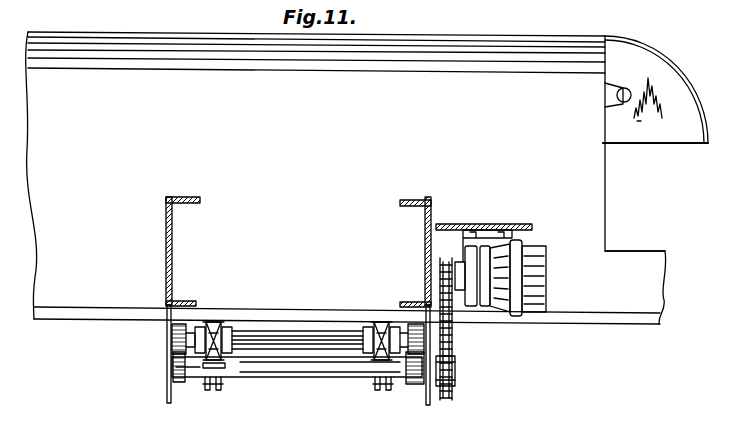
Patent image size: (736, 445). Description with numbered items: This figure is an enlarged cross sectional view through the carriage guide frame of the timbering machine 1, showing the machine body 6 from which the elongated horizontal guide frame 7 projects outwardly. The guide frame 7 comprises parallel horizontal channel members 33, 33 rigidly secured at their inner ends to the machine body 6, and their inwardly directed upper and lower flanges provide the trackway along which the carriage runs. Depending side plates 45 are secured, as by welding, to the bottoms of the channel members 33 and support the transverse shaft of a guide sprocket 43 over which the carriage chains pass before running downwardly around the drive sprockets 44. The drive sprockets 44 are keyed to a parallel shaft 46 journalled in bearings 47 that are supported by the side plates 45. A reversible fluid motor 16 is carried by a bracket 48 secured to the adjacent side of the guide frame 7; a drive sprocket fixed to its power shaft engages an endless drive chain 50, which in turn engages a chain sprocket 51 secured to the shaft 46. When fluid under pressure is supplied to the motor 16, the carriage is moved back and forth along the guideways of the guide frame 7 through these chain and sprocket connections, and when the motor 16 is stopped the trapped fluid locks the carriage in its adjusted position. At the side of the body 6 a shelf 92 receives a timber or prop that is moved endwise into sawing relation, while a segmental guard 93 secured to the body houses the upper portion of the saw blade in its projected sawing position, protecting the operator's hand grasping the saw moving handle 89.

The machine 1 is at (99, 25).
The machine body 6 is at (487, 42).
The guide frame 7 is at (182, 200).
The reversible motor 16 is at (542, 298).
The channel members 33 is at (166, 236).
The guide sprocket 43 is at (218, 323).
The drive sprockets 44 is at (214, 391).
The side plates 45 is at (167, 400).
The shaft 46 is at (312, 377).
The bearings 47 is at (172, 372).
The bracket 48 is at (512, 226).
The endless drive chain 50 is at (453, 336).
The chain sprocket 51 is at (455, 372).
The saw moving handle 89 is at (618, 85).
The shelf 92 is at (630, 252).
The segmental guard 93 is at (667, 60).